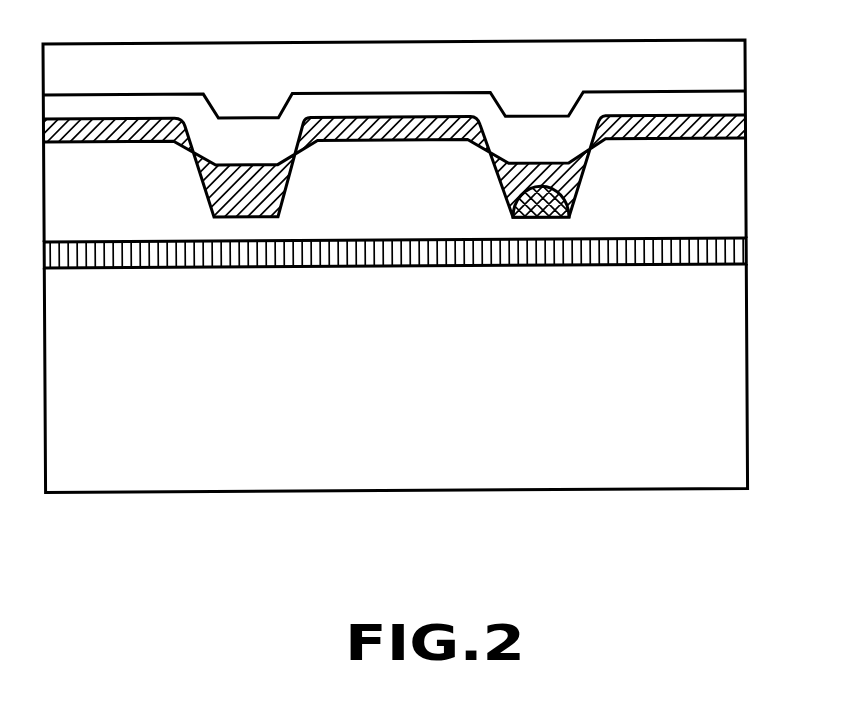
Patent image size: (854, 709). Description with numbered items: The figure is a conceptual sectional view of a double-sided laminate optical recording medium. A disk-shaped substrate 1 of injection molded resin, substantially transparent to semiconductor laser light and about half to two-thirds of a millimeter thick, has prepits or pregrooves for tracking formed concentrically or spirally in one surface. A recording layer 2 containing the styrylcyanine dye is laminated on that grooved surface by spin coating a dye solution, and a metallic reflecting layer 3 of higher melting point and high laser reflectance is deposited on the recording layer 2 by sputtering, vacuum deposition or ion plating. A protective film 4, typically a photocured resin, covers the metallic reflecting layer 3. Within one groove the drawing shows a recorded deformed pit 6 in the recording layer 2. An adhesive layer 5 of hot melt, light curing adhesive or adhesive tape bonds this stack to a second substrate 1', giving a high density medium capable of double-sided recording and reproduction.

The substrate 1 is at (427, 178).
The substrate 1' is at (436, 378).
The recording layer 2 is at (747, 122).
The metallic reflecting layer 3 is at (728, 105).
The protective film 4 is at (723, 65).
The adhesive layer 5 is at (737, 257).
The recorded deformed pit 6 is at (537, 222).